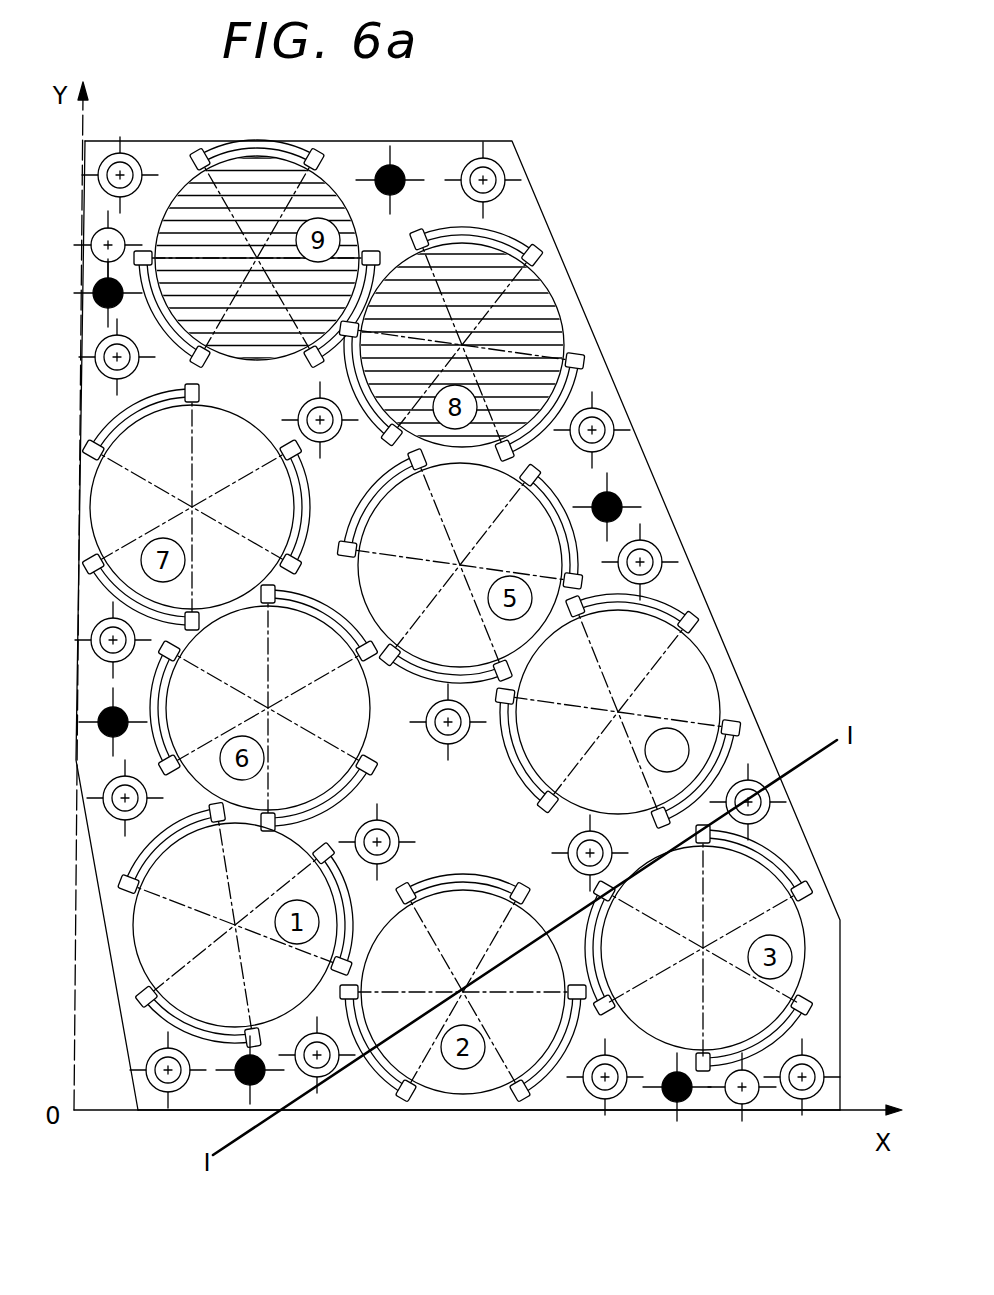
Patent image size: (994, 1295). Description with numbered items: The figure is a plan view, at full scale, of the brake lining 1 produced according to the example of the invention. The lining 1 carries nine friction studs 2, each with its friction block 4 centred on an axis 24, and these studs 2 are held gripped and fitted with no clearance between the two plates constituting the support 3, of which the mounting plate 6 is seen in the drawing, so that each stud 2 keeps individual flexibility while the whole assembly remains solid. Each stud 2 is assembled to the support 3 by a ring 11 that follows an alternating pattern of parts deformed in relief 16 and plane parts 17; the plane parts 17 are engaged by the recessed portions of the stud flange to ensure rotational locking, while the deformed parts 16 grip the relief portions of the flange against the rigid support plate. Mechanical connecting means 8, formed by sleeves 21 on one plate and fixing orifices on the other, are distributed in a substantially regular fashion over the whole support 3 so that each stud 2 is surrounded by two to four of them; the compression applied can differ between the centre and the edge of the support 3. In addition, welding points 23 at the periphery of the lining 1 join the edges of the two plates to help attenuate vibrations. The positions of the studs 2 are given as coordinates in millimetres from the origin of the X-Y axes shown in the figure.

The brake lining 1 is at (140, 1127).
The friction stud 2 is at (700, 633).
The support 3 is at (370, 1120).
The friction block 4 is at (690, 687).
The mounting plate 6 is at (625, 457).
The mechanical connecting means 8 is at (643, 540).
The ring 11 is at (583, 328).
The deformed part of the ring 16 is at (495, 230).
The plane part of the ring 17 is at (547, 268).
The sleeve 21 is at (670, 553).
The welding point 23 is at (100, 730).
The axis 24 is at (707, 943).